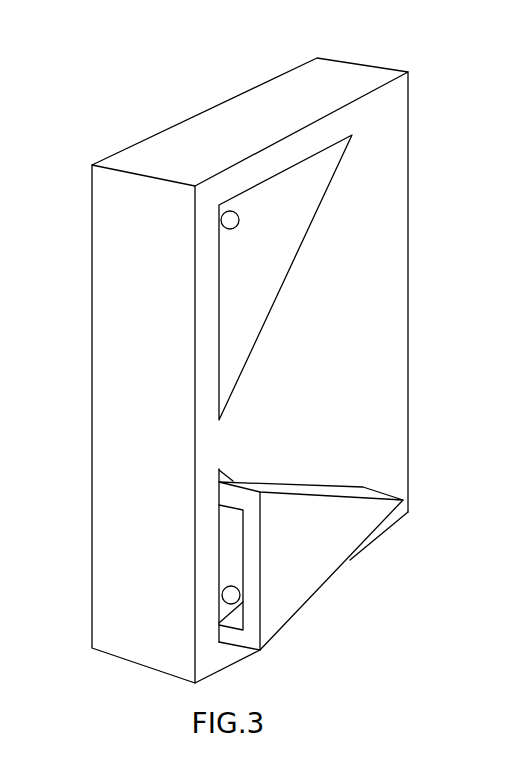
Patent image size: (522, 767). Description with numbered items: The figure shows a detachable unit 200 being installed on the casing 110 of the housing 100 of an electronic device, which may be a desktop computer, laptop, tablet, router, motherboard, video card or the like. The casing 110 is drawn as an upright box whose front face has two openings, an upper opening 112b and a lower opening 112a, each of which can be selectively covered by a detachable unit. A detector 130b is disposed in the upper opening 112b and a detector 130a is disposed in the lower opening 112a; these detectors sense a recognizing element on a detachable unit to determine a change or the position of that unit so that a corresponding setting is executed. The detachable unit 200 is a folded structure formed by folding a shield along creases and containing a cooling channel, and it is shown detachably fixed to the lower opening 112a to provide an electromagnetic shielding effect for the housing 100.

The housing 100 is at (216, 344).
The casing 110 is at (357, 72).
The opening 112a is at (223, 520).
The opening 112b is at (223, 298).
The detector 130a is at (227, 596).
The detector 130b is at (227, 221).
The detachable unit 200 is at (312, 583).